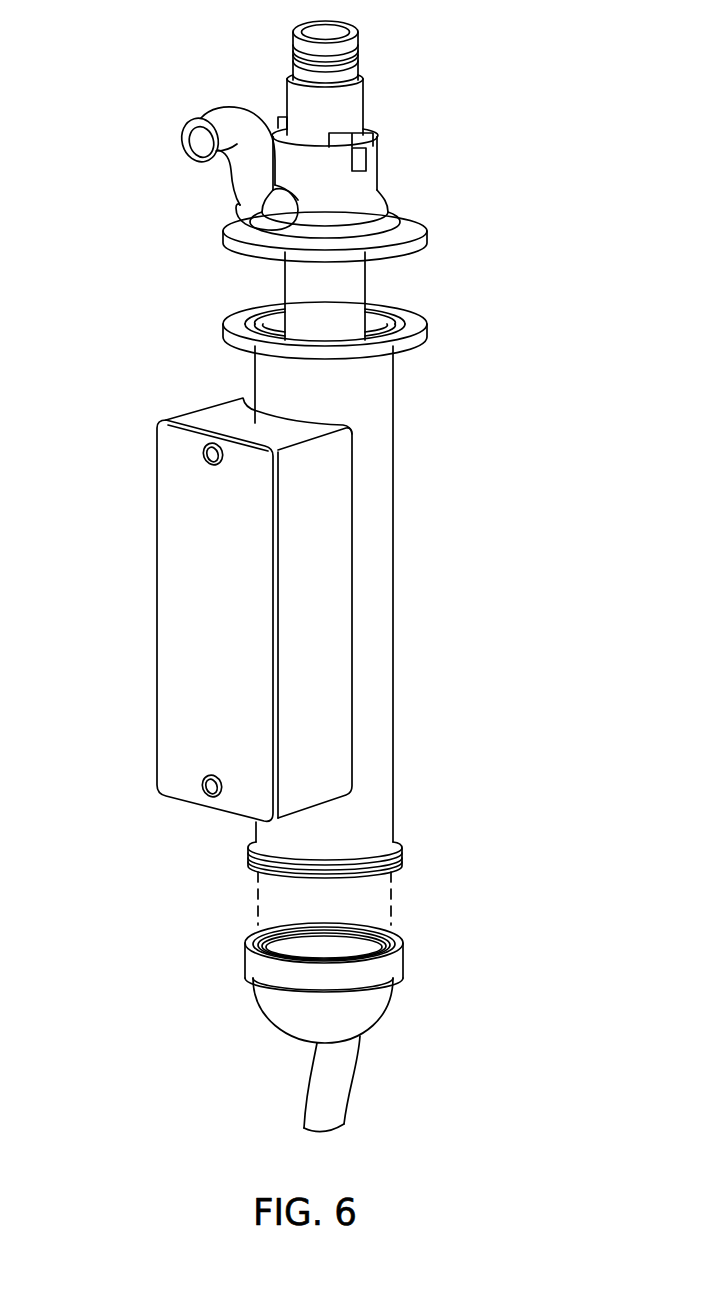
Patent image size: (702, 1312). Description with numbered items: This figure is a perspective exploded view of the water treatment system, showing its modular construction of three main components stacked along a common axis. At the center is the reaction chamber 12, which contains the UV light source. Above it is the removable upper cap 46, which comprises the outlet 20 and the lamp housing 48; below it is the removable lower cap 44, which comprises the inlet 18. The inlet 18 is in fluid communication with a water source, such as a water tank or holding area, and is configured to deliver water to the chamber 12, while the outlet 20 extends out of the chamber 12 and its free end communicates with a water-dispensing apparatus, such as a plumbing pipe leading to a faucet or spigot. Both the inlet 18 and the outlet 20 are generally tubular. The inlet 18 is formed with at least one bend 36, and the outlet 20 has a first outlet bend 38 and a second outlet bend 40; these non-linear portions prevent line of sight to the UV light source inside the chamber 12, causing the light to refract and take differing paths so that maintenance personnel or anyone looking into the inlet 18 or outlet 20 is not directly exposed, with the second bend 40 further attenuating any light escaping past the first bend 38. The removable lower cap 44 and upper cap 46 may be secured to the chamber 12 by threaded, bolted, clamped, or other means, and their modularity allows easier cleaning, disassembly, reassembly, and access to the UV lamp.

The reaction chamber 12 is at (178, 578).
The inlet 18 is at (243, 1125).
The outlet 20 is at (168, 88).
The bend 36 is at (337, 1091).
The first outlet bend 38 is at (238, 198).
The second outlet bend 40 is at (232, 122).
The removable lower cap 44 is at (275, 998).
The removable upper cap 46 is at (420, 170).
The lamp housing 48 is at (352, 100).